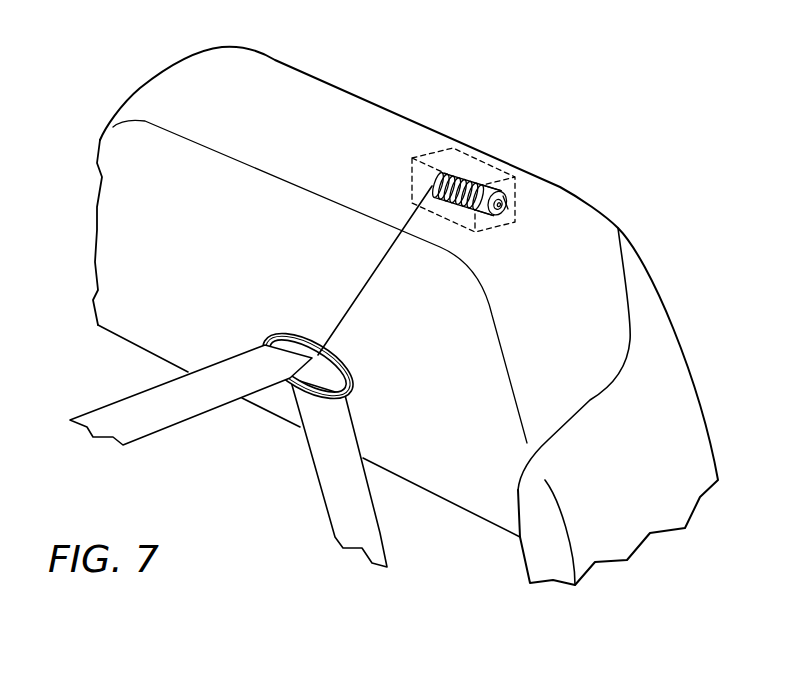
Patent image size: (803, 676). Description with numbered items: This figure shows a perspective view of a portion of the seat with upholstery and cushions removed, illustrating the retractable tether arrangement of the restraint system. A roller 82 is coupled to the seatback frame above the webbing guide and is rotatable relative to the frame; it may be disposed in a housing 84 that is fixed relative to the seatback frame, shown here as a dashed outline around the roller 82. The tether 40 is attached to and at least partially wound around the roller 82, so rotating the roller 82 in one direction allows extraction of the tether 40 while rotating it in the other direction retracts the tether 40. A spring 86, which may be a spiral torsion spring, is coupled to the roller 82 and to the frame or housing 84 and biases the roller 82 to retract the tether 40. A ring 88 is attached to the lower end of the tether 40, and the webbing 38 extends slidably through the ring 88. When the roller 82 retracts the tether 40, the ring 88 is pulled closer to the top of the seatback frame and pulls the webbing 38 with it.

The webbing 38 is at (362, 440).
The tether 40 is at (363, 290).
The roller 82 is at (412, 163).
The housing 84 is at (497, 157).
The spring 86 is at (507, 203).
The ring 88 is at (353, 382).